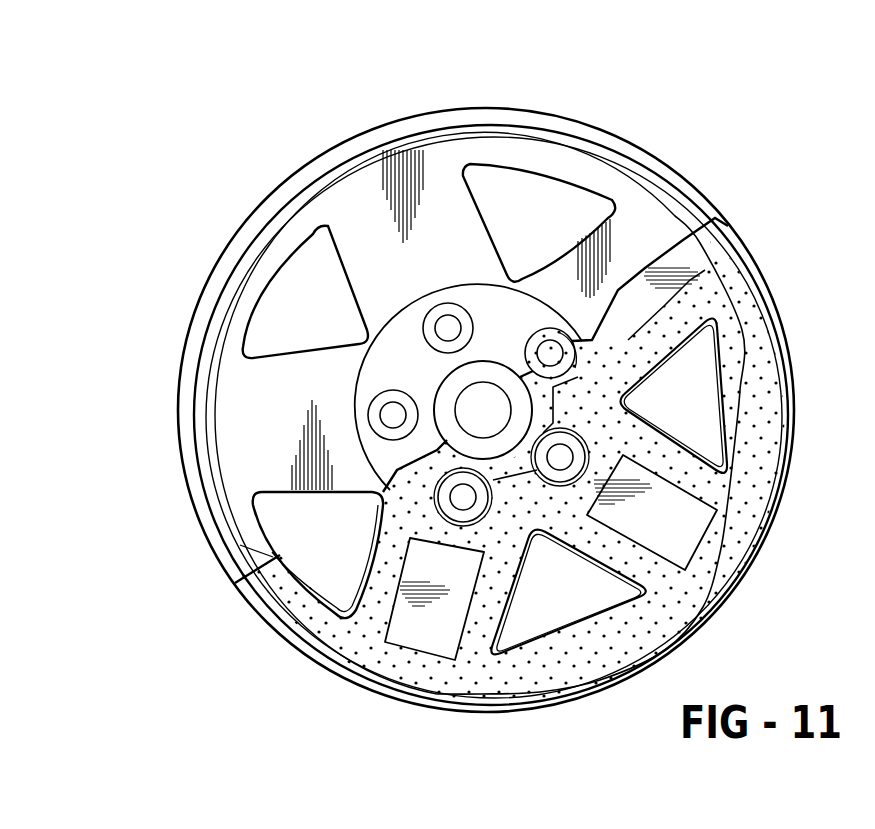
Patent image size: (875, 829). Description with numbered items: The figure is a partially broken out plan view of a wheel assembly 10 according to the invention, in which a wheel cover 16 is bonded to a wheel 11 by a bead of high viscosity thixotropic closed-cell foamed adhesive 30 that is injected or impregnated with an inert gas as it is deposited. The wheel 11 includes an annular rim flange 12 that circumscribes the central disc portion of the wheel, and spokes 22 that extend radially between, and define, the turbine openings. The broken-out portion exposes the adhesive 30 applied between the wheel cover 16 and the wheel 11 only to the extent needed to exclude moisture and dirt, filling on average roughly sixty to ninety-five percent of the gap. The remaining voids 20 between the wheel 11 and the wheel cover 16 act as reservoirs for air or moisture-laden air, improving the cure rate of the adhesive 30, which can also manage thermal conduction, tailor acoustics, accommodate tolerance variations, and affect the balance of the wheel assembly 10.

The wheel assembly 10 is at (246, 156).
The wheel 11 is at (736, 226).
The annular rim flange 12 is at (346, 298).
The wheel cover 16 is at (645, 227).
The voids 20 is at (672, 263).
The spokes 22 is at (695, 328).
The closed-cell foamed adhesive 30 is at (717, 290).